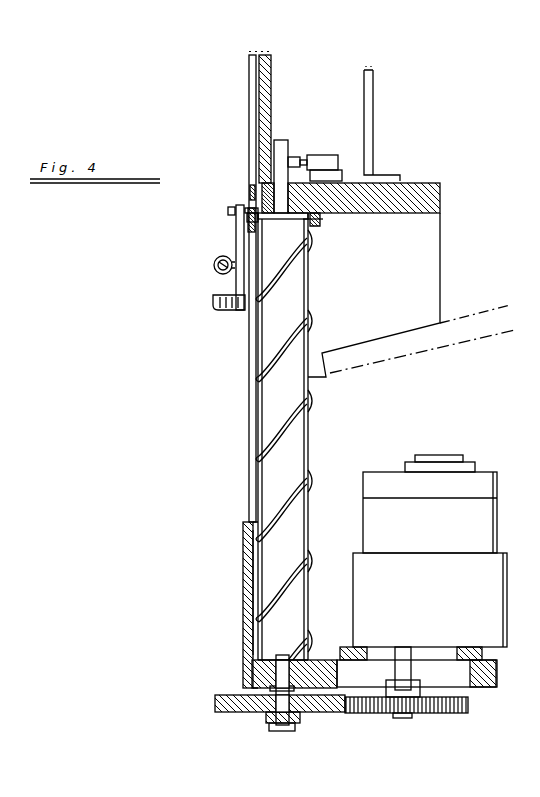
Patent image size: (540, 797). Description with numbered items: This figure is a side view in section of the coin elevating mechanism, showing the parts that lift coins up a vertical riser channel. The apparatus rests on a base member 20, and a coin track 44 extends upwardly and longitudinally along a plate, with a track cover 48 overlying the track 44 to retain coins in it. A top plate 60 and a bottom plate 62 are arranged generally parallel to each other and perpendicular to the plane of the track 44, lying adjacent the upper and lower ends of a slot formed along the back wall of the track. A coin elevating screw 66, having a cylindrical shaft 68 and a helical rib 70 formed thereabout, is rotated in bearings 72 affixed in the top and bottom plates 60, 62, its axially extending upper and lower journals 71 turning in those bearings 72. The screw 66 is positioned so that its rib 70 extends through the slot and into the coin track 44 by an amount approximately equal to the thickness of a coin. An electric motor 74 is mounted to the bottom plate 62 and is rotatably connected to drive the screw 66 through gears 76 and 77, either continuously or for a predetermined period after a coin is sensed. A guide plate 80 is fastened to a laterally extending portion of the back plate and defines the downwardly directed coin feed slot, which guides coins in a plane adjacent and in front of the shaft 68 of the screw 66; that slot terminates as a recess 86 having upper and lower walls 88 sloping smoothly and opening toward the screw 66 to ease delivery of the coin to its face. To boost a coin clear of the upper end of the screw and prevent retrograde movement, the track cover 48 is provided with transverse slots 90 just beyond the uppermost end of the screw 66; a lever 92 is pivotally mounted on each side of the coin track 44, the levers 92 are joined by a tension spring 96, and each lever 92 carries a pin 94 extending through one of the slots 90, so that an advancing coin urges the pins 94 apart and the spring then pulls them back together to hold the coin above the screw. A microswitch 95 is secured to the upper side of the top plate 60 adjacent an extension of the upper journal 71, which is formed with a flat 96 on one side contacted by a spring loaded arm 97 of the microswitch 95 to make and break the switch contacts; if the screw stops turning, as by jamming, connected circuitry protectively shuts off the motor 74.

The base member 20 is at (402, 363).
The coin track 44 is at (262, 76).
The track cover 48 is at (258, 71).
The top plate 60 is at (441, 198).
The bottom plate 62 is at (497, 680).
The coin elevating screw 66 is at (311, 436).
The cylindrical shaft 68 is at (300, 289).
The helical rib 70 is at (309, 326).
The journal 71 is at (281, 140).
The bearing 72 is at (322, 215).
The electric motor 74 is at (503, 555).
The gear 76 is at (470, 706).
The gear 77 is at (215, 701).
The guide plate 80 is at (243, 605).
The recess 86 is at (256, 578).
The upper and lower walls 88 is at (252, 556).
The transverse slot 90 is at (243, 223).
The lever 92 is at (236, 240).
The pin 94 is at (228, 210).
The microswitch 95 is at (327, 157).
The flat 96 is at (289, 159).
The spring loaded arm 97 is at (302, 160).